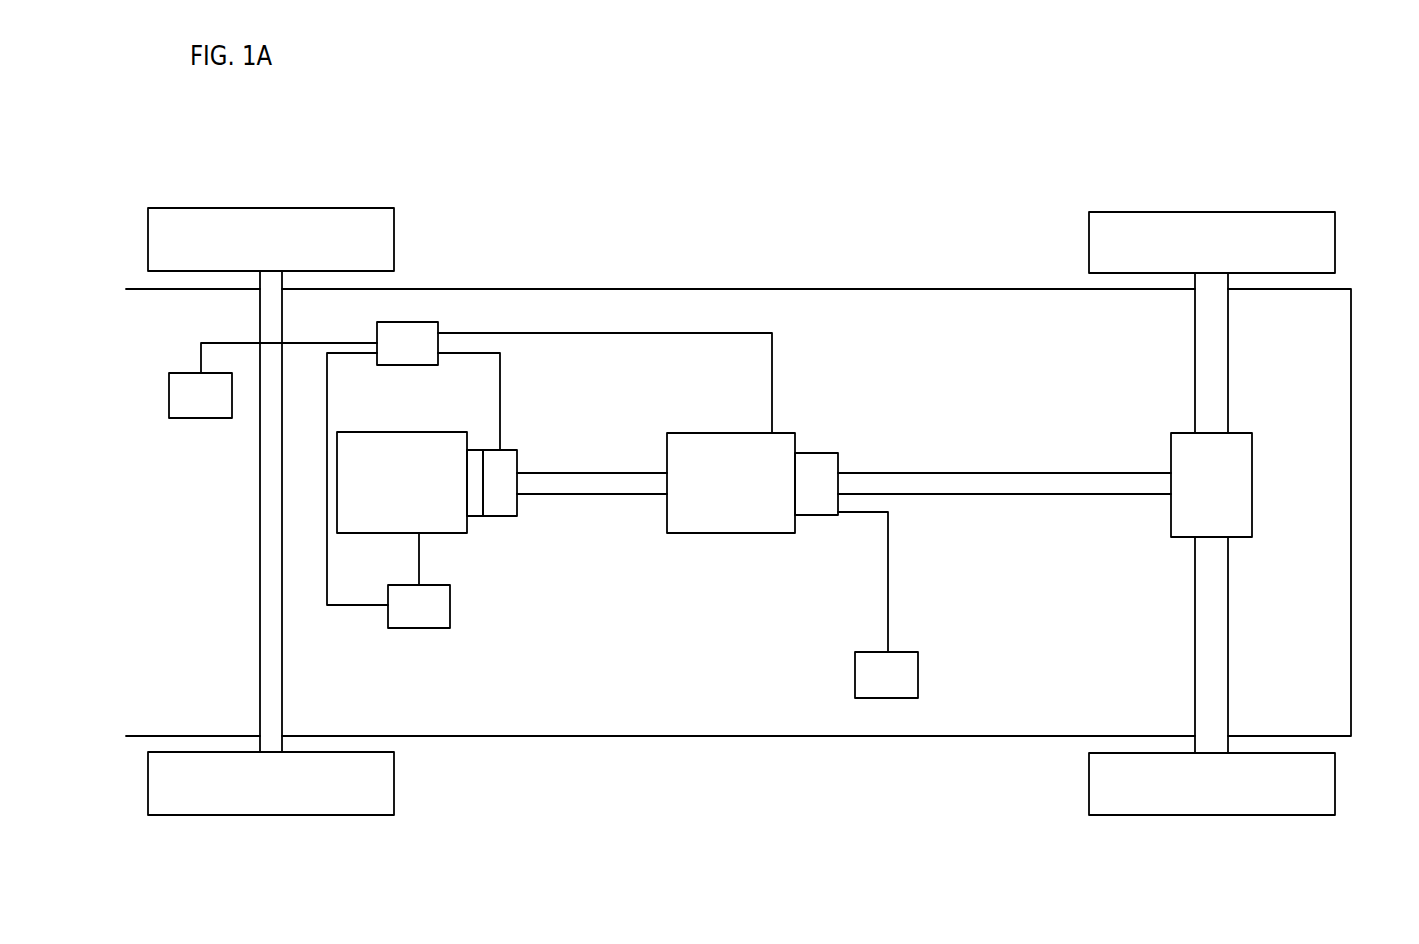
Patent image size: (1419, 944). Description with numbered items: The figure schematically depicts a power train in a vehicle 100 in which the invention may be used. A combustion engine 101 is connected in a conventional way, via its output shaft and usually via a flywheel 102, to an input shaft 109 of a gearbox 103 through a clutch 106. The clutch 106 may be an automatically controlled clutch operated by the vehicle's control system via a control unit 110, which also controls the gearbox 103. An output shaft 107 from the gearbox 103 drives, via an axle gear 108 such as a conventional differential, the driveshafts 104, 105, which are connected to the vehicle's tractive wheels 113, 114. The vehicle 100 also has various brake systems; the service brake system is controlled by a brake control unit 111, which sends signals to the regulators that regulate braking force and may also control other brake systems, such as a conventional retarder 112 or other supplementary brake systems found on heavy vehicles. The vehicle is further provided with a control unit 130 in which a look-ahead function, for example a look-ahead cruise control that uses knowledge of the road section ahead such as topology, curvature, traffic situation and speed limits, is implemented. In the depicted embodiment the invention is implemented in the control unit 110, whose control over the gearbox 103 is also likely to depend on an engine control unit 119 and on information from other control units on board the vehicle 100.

The vehicle 100 is at (632, 108).
The combustion engine 101 is at (363, 522).
The flywheel 102 is at (470, 455).
The gearbox 103 is at (733, 443).
The driveshaft 104 is at (1215, 352).
The driveshaft 105 is at (1222, 654).
The clutch 106 is at (510, 522).
The output shaft 107 is at (1085, 490).
The axle gear 108 is at (1245, 482).
The input shaft 109 is at (632, 483).
The control unit 110 is at (549, 463).
The brake control unit 111 is at (878, 605).
The retarder 112 is at (818, 512).
The tractive wheel 113 is at (1328, 234).
The tractive wheel 114 is at (1327, 787).
The engine control unit 119 is at (419, 580).
The control unit 130 is at (273, 380).